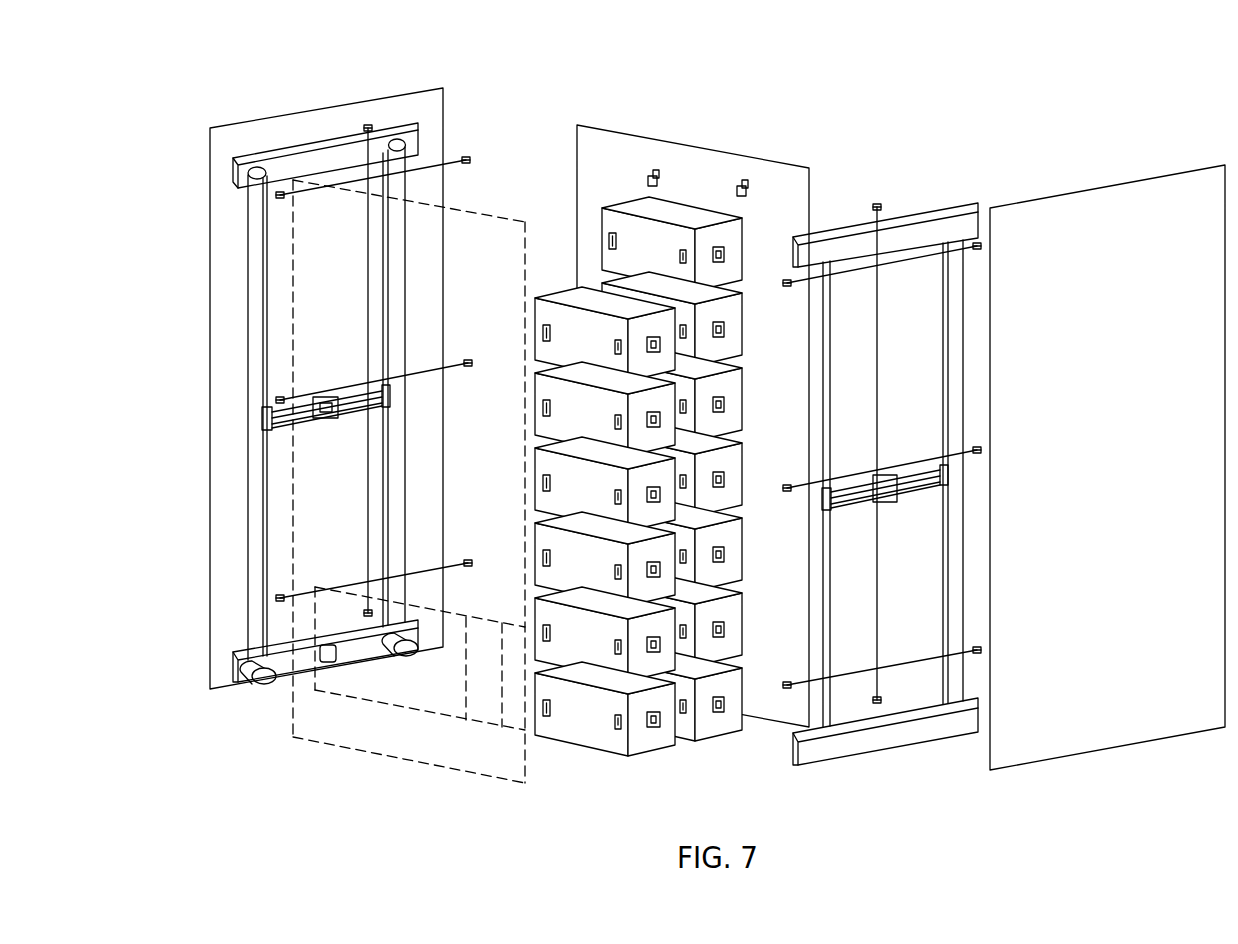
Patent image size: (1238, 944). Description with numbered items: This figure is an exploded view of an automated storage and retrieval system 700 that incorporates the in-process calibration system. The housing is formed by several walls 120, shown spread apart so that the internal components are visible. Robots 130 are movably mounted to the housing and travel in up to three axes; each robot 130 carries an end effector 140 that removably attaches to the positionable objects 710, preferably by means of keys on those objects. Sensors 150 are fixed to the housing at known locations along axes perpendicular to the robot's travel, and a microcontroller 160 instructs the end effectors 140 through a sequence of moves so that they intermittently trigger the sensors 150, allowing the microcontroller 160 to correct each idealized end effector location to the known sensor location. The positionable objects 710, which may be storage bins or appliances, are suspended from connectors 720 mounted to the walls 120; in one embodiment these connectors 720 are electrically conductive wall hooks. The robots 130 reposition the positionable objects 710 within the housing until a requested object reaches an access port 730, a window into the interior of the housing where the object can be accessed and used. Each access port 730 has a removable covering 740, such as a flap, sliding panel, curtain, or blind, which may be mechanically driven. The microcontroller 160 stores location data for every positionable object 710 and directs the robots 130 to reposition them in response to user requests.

The automated storage and retrieval system 700 is at (272, 77).
The wall 120 is at (438, 89).
The robot 130 is at (242, 680).
The end effector 140 is at (327, 418).
The sensor 150 is at (878, 204).
The microcontroller 160 is at (324, 663).
The positionable object 710 is at (643, 758).
The connector 720 is at (744, 186).
The access port 730 is at (408, 700).
The removable covering 740 is at (492, 718).